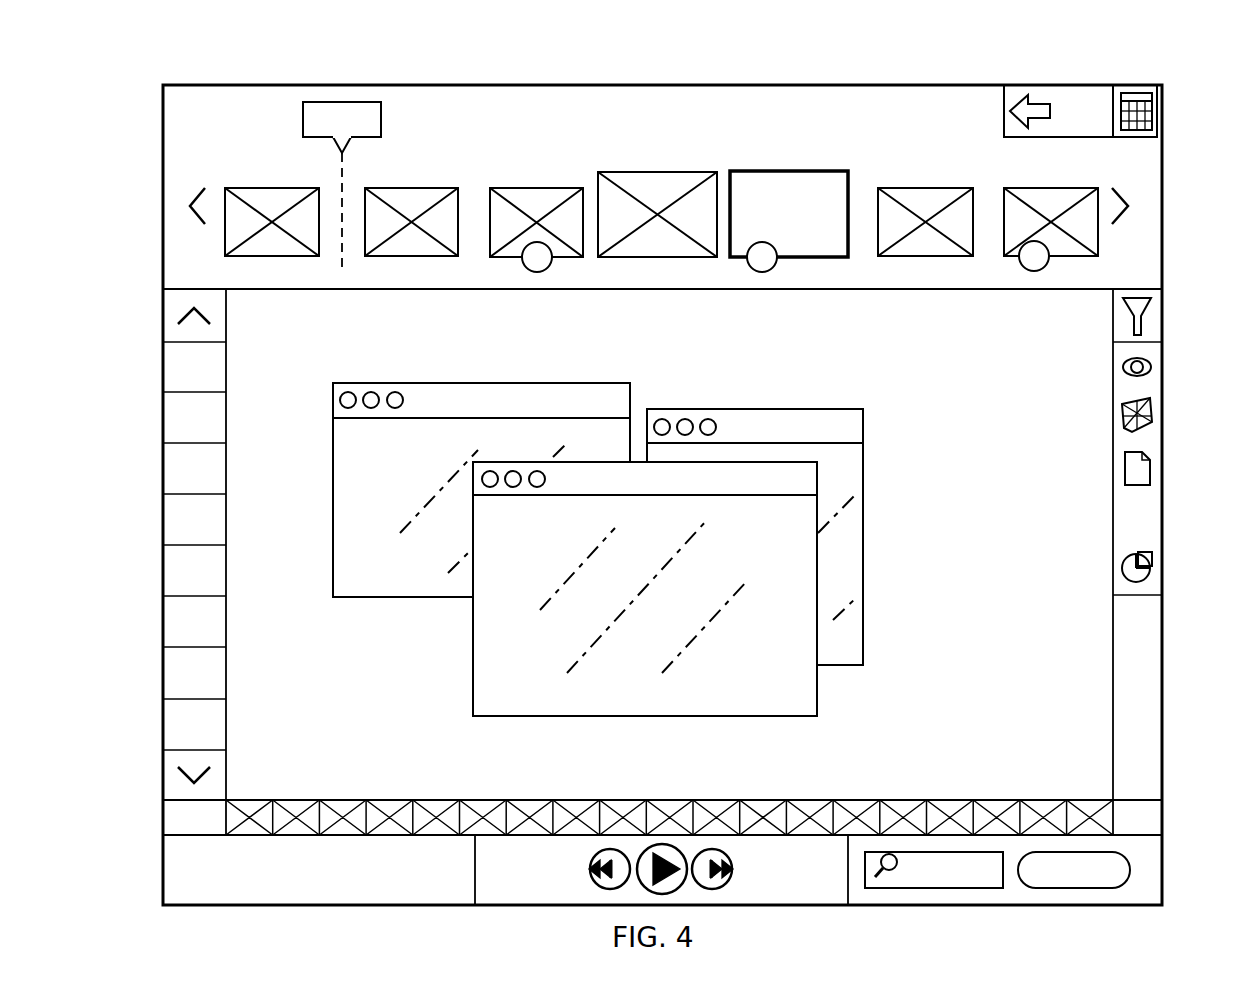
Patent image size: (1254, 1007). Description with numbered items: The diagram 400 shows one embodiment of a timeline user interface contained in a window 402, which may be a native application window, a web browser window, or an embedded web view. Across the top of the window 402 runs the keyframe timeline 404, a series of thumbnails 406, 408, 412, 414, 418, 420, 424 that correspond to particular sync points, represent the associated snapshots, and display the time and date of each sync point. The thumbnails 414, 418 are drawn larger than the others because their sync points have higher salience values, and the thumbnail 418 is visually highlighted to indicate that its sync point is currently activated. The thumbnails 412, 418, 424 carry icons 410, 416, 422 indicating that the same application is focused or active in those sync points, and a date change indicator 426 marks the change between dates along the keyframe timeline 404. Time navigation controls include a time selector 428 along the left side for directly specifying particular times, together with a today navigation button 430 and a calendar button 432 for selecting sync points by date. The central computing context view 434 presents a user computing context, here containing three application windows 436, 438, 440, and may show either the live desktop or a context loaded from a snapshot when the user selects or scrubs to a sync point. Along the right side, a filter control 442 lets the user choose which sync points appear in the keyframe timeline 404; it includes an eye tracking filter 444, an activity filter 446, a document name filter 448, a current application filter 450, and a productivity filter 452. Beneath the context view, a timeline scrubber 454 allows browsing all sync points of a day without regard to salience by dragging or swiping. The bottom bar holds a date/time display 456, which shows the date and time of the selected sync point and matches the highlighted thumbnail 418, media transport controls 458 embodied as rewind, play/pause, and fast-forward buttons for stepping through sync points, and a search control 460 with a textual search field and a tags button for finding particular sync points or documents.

The diagram 400 is at (1195, 101).
The window 402 is at (915, 86).
The keyframe timeline 404 is at (205, 174).
The thumbnail 406 is at (275, 258).
The thumbnail 408 is at (416, 258).
The icon 410 is at (537, 273).
The thumbnail 412 is at (560, 258).
The thumbnail 414 is at (650, 258).
The icon 416 is at (762, 273).
The thumbnail 418 is at (790, 259).
The thumbnail 420 is at (920, 258).
The icon 422 is at (1034, 272).
The thumbnail 424 is at (1062, 258).
The date change indicator 426 is at (350, 102).
The time selector 428 is at (153, 340).
The today navigation button 430 is at (1068, 93).
The calendar button 432 is at (1157, 113).
The computing context view 434 is at (632, 524).
The application window 436 is at (600, 383).
The application window 438 is at (864, 459).
The application window 440 is at (818, 553).
The filter control 442 is at (1166, 544).
The eye tracking filter 444 is at (1151, 366).
The activity filter 446 is at (1152, 408).
The document name filter 448 is at (1151, 468).
The current application filter 450 is at (1151, 519).
The productivity filter 452 is at (1151, 562).
The timeline scrubber 454 is at (218, 818).
The date/time display 456 is at (178, 870).
The media transport controls 458 is at (558, 868).
The search control 460 is at (857, 877).